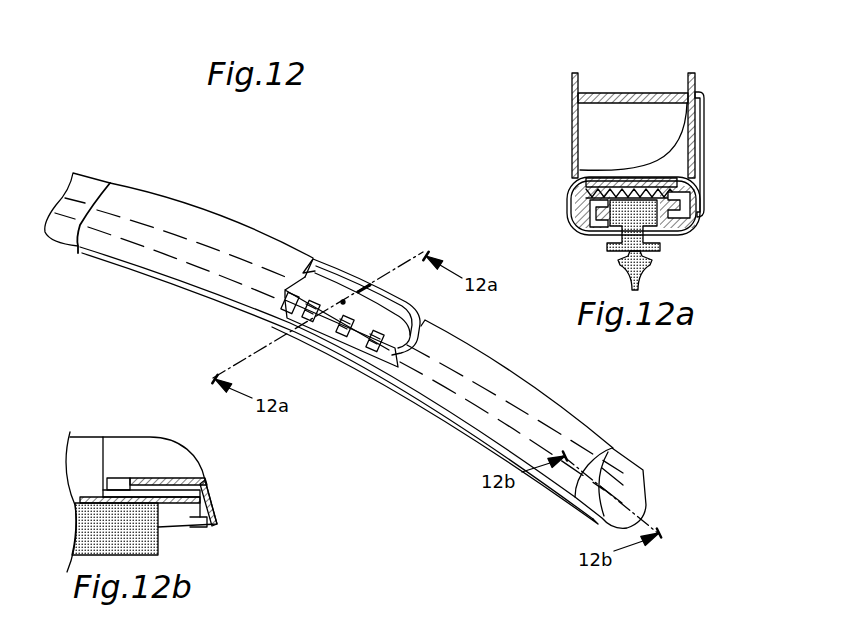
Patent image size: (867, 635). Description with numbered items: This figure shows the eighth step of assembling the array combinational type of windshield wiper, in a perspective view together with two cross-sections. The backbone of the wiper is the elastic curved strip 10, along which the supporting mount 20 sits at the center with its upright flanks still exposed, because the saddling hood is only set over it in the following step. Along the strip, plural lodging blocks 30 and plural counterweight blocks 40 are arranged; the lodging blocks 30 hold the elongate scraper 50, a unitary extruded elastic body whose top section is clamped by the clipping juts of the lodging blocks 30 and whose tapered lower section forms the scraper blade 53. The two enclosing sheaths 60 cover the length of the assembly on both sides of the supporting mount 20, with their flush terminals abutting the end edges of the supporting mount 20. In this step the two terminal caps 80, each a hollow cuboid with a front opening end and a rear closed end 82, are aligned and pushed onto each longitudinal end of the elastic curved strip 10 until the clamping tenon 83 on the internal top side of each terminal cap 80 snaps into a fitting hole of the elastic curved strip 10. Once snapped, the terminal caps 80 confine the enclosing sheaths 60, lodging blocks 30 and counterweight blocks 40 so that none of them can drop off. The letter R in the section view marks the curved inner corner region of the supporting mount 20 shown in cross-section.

In FIG. 12A, the elastic curved strip 10 is at (683, 186).
In FIG. 12B, the elastic curved strip 10 is at (82, 500).
In FIG. 12, the supporting mount 20 is at (348, 275).
In FIG. 12A, the supporting mount 20 is at (697, 132).
In FIG. 12, the lodging blocks 30 is at (330, 336).
In FIG. 12A, the lodging blocks 30 is at (588, 201).
In FIG. 12, the counterweight blocks 40 is at (300, 322).
In FIG. 12, the elongate scraper 50 is at (448, 413).
In FIG. 12A, the elongate scraper 50 is at (661, 236).
In FIG. 12B, the elongate scraper 50 is at (87, 532).
In FIG. 12A, the scraper blade 53 is at (640, 281).
In FIG. 12, the enclosing sheaths 60 is at (230, 232).
In FIG. 12A, the enclosing sheaths 60 is at (568, 219).
In FIG. 12B, the enclosing sheaths 60 is at (87, 453).
In FIG. 12, the terminal caps 80 is at (85, 185).
In FIG. 12A, the terminal caps 80 is at (700, 217).
In FIG. 12B, the terminal caps 80 is at (130, 457).
In FIG. 12B, the rear closed end 82 is at (213, 507).
In FIG. 12B, the clamping tenon 83 is at (195, 523).
In FIG. 12A, the radius curve R is at (627, 162).